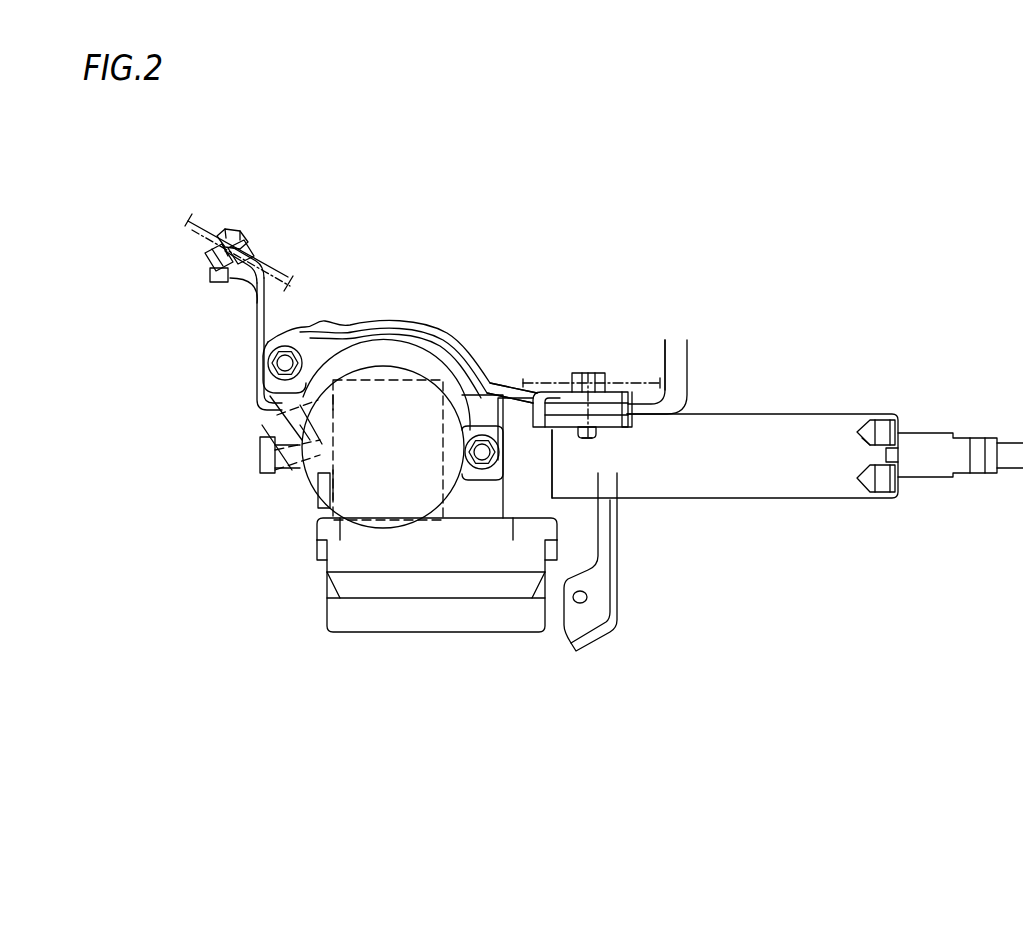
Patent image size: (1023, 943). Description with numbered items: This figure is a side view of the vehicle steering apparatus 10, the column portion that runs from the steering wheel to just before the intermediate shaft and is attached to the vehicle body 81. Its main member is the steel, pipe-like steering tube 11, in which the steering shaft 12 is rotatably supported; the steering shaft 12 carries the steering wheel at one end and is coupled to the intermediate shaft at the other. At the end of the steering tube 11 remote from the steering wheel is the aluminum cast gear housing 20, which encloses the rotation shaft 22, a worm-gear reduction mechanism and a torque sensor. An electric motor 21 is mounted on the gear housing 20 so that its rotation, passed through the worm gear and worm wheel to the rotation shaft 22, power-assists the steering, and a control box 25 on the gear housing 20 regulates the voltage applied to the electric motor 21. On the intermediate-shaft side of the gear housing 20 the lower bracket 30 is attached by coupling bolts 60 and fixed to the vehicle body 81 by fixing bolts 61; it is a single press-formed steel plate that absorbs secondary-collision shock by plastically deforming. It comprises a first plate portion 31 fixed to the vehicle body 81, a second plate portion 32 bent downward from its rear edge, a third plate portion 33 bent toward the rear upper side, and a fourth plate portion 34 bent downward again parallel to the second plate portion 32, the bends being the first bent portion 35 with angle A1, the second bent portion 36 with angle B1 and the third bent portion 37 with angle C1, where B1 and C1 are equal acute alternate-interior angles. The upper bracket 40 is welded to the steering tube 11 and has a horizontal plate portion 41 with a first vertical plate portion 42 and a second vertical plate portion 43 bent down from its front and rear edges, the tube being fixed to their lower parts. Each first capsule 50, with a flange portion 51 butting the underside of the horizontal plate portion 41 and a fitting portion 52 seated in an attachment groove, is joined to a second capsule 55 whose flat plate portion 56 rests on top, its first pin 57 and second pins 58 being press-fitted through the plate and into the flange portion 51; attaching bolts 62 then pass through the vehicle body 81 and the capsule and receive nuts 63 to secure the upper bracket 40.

The vehicle steering apparatus 10 is at (760, 390).
The steering tube 11 is at (768, 484).
The steering shaft 12 is at (944, 470).
The gear housing 20 is at (408, 405).
The electric motor 21 is at (376, 352).
The rotation shaft 22 is at (260, 455).
The control box 25 is at (358, 617).
The lower bracket 30 is at (253, 357).
The first plate portion 31 is at (207, 243).
The second plate portion 32 is at (260, 323).
The third plate portion 33 is at (277, 415).
The fourth plate portion 34 is at (295, 458).
The first bent portion 35 is at (230, 285).
The second bent portion 36 is at (273, 410).
The third bent portion 37 is at (260, 445).
The upper bracket 40 is at (503, 388).
The horizontal plate portion 41 is at (545, 432).
The first vertical plate portion 42 is at (458, 388).
The second vertical plate portion 43 is at (687, 340).
The first capsule 50 is at (632, 388).
The flange portion 51 is at (665, 340).
The fitting portion 52 is at (620, 385).
The second capsule 55 is at (556, 390).
The flat plate portion 56 is at (572, 372).
The first pin 57 is at (570, 432).
The second pin 58 is at (590, 440).
The coupling bolt 60 is at (320, 503).
The fixing bolt 61 is at (234, 230).
The attaching bolt 62 is at (585, 385).
The nut 63 is at (603, 425).
The vehicle body 81 is at (257, 257).